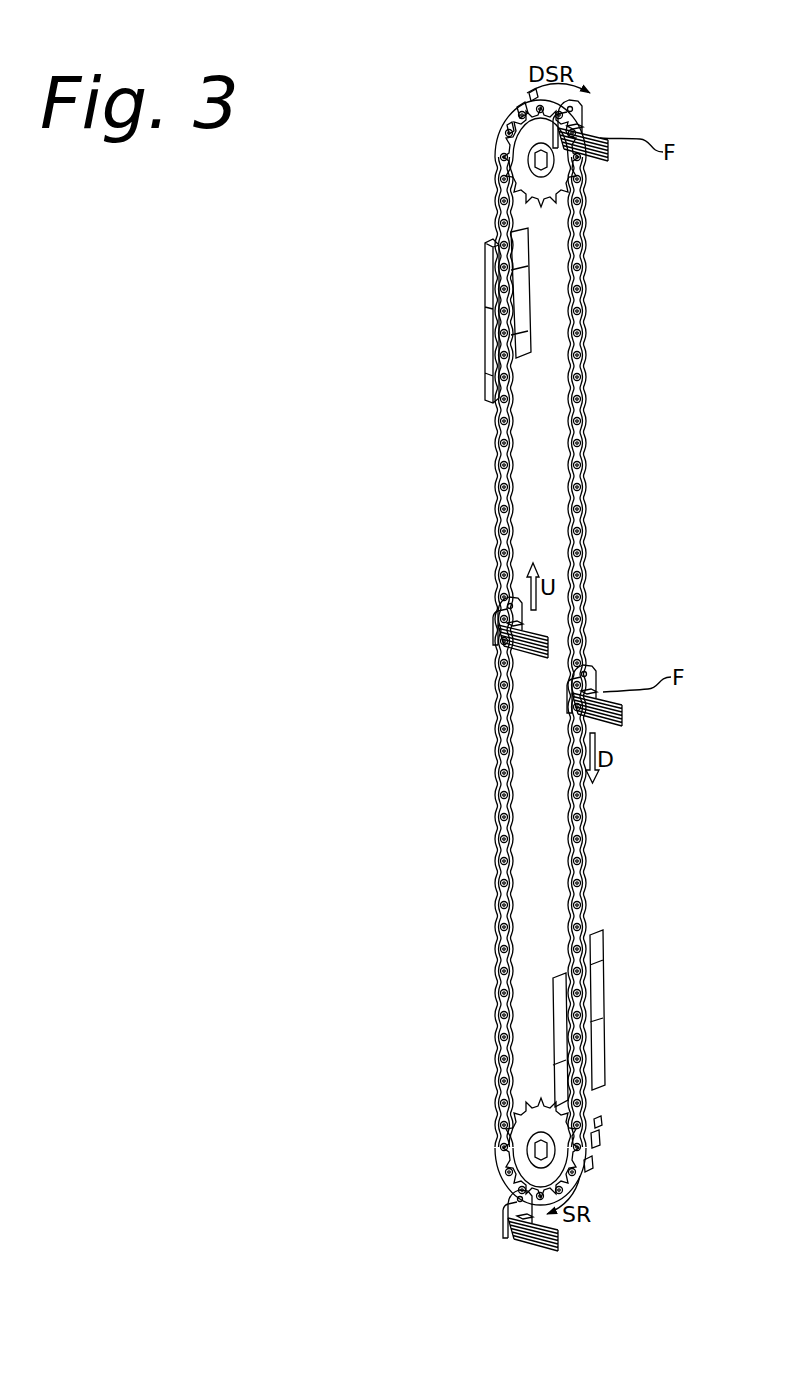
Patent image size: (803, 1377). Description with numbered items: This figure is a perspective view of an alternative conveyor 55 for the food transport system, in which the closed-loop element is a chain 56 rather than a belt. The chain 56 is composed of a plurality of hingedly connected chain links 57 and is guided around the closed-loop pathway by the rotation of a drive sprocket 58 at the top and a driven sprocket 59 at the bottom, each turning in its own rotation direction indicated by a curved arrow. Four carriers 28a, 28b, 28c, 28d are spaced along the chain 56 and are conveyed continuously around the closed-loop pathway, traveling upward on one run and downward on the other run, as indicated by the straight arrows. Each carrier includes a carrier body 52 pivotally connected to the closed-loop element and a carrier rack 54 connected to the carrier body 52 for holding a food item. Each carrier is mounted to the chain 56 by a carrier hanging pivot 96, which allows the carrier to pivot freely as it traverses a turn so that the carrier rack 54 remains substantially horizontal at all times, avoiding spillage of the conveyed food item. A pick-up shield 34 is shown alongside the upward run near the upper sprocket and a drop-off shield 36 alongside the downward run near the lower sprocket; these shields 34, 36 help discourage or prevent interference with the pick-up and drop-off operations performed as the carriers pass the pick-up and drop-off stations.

The carrier 28a is at (617, 127).
The carrier 28b is at (487, 681).
The carrier 28c is at (499, 1232).
The carrier 28d is at (572, 720).
The pick-up shield 34 is at (476, 297).
The drop-off shield 36 is at (626, 1020).
The carrier body 52 is at (570, 115).
The carrier rack 54 is at (600, 166).
The alternative conveyor 55 is at (508, 652).
The chain 56 is at (585, 652).
The chain link 57 is at (582, 495).
The drive sprocket 58 is at (530, 166).
The driven sprocket 59 is at (556, 1142).
The carrier hanging pivot 96 is at (560, 122).